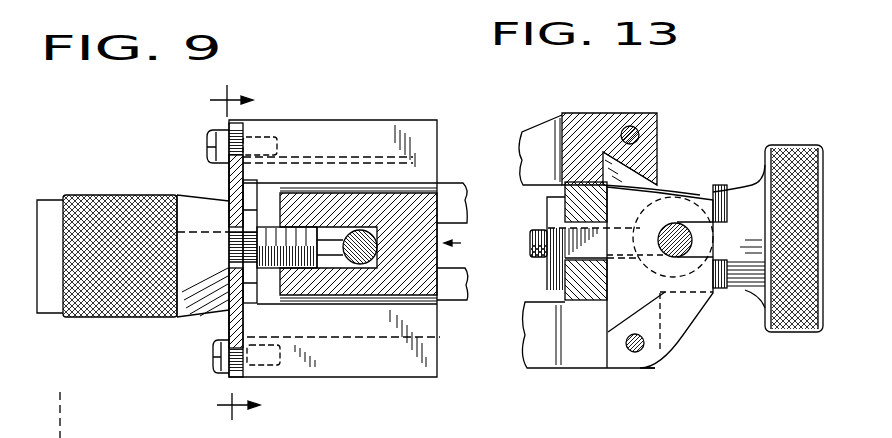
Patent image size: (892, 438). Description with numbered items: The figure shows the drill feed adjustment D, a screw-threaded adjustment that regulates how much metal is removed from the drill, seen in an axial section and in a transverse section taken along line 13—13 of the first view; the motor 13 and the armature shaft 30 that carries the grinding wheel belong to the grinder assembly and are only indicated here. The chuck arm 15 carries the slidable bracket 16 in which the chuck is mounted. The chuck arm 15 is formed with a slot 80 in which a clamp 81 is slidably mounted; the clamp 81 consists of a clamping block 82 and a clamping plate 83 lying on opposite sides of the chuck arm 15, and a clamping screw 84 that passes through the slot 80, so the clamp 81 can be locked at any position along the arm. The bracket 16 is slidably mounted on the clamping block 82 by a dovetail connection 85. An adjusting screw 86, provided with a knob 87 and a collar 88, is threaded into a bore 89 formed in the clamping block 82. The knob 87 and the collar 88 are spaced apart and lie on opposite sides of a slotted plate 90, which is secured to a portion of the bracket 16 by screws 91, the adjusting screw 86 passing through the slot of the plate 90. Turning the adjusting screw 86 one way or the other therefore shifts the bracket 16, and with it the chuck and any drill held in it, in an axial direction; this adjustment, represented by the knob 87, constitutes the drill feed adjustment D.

In FIG. 9, the motor 13 is at (223, 259).
In FIG. 9, the chuck arm 15 is at (45, 200).
In FIG. 13, the chuck arm 15 is at (578, 297).
In FIG. 9, the bracket 16 is at (307, 133).
In FIG. 13, the bracket 16 is at (587, 123).
In FIG. 9, the armature shaft 30 is at (98, 415).
In FIG. 9, the slot 80 is at (465, 246).
In FIG. 13, the clamp 81 is at (738, 162).
In FIG. 9, the clamping block 82 is at (422, 298).
In FIG. 13, the clamping block 82 is at (690, 191).
In FIG. 13, the clamping plate 83 is at (550, 212).
In FIG. 9, the clamping screw 84 is at (362, 262).
In FIG. 13, the clamping screw 84 is at (540, 258).
In FIG. 13, the dovetail connection 85 is at (660, 183).
In FIG. 9, the adjusting screw 86 is at (297, 238).
In FIG. 13, the adjusting screw 86 is at (678, 251).
In FIG. 9, the knob 87 is at (130, 168).
In FIG. 9, the collar 88 is at (258, 292).
In FIG. 13, the collar 88 is at (703, 241).
In FIG. 9, the bore 89 is at (343, 232).
In FIG. 9, the slotted plate 90 is at (229, 175).
In FIG. 13, the slotted plate 90 is at (683, 327).
In FIG. 9, the screws 91 is at (212, 136).
In FIG. 13, the screws 91 is at (632, 125).
In FIG. 13, the drill feed adjustment D is at (779, 139).